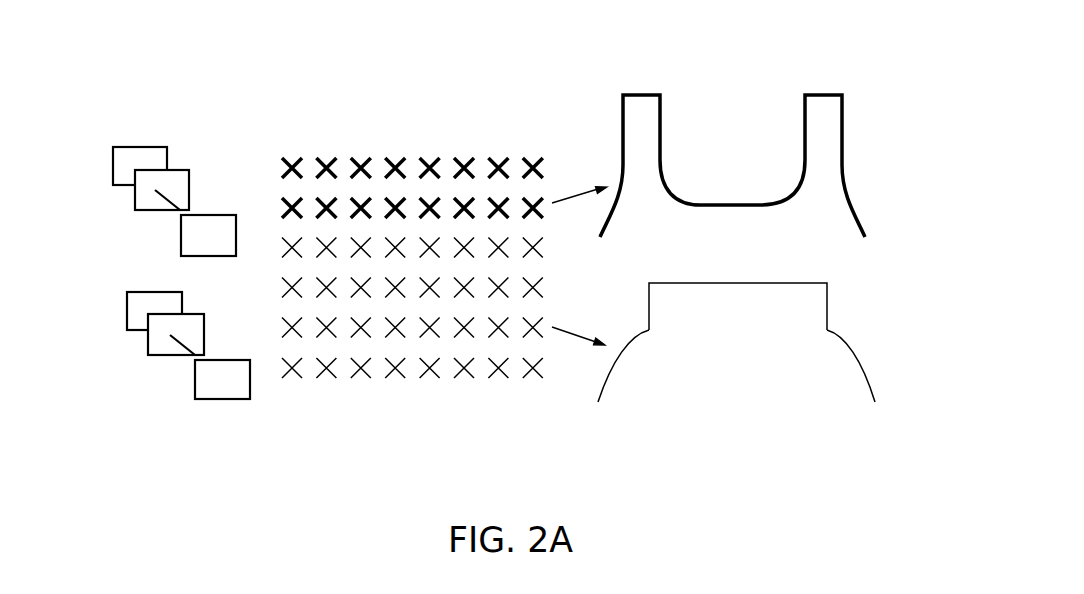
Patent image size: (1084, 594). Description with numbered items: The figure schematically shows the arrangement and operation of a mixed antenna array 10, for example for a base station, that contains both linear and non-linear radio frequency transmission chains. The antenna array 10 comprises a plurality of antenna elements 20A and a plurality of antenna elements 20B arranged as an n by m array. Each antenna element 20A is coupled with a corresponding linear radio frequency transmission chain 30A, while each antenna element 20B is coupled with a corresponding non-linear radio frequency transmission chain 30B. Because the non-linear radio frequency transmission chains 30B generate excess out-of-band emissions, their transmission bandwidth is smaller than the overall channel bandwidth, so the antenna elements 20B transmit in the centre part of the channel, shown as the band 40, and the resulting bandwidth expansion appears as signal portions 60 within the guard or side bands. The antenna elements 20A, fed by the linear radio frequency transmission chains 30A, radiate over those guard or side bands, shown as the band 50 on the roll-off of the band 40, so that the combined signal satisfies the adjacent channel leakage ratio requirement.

The antenna array 10 is at (242, 118).
The antenna elements 20A is at (423, 142).
The antenna elements 20B is at (453, 385).
The linear radio frequency transmission chains 30A is at (110, 172).
The non-linear radio frequency transmission chains 30B is at (123, 318).
The band 40 is at (873, 322).
The band 50 is at (847, 170).
The signal portions 60 is at (873, 378).